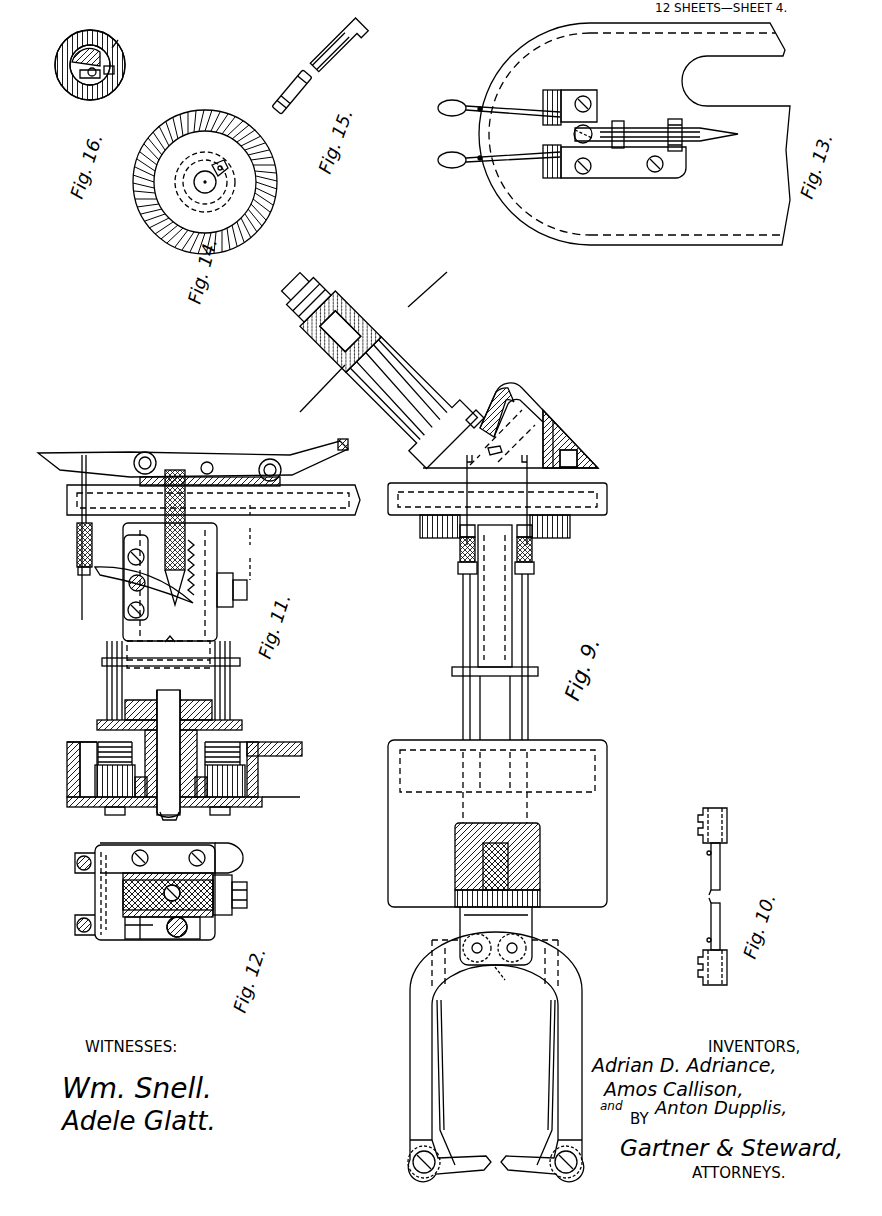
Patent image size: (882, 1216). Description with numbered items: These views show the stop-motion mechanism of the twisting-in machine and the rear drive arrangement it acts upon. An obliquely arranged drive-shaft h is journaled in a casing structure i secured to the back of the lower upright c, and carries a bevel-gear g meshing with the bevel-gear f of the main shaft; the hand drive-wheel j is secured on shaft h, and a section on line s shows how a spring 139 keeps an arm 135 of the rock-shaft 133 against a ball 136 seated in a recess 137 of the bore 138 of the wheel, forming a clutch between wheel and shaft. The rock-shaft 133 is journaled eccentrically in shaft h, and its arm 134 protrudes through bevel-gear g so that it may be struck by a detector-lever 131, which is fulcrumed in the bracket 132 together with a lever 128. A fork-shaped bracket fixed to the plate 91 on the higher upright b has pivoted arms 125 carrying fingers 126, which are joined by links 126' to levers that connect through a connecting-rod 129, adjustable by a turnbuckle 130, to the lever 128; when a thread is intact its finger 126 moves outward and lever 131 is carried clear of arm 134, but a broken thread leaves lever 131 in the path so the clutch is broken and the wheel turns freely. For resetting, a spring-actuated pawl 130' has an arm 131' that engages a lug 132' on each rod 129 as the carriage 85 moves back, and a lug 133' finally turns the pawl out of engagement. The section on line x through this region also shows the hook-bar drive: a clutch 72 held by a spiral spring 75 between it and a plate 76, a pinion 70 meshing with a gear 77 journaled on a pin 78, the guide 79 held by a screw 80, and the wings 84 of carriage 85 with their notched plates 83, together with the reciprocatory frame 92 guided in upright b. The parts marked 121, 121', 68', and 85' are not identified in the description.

In FIG. 16, the bore of the hand-wheel 138 is at (52, 44).
In FIG. 16, the arm of the rock-shaft 135 is at (104, 62).
In FIG. 15, the arm of the rock-shaft 135 is at (288, 104).
In FIG. 16, the ball 136 is at (114, 76).
In FIG. 16, the recess 137 is at (97, 77).
In FIG. 16, the spring 139 is at (88, 80).
In FIG. 16, the drive-wheel j is at (117, 44).
In FIG. 9, the drive-wheel j is at (372, 316).
In FIG. 14, the bevel-gear g is at (232, 128).
In FIG. 9, the bevel-gear g is at (516, 388).
In FIG. 14, the drive-shaft h is at (208, 190).
In FIG. 9, the drive-shaft h is at (428, 388).
In FIG. 14, the arm of the rock-shaft 134 is at (226, 172).
In FIG. 15, the arm of the rock-shaft 134 is at (376, 32).
In FIG. 9, the arm of the rock-shaft 134 is at (503, 449).
In FIG. 15, the rock-shaft 133 is at (292, 89).
In FIG. 9, the rock-shaft 133 is at (478, 396).
In FIG. 13, the lever 128 is at (521, 117).
In FIG. 11, the lever 128 is at (128, 452).
In FIG. 13, the screw 80 is at (591, 126).
In FIG. 11, the screw 80 is at (150, 505).
In FIG. 13, the detector-lever 131 is at (656, 123).
In FIG. 11, the detector-lever 131 is at (321, 439).
In FIG. 13, the bracket 132 is at (626, 195).
In FIG. 11, the bracket 132 is at (210, 454).
In FIG. 13, the upright c is at (713, 228).
In FIG. 9, the upright c is at (404, 490).
In FIG. 11, the upright c is at (213, 500).
In FIG. 9, the section line s is at (372, 342).
In FIG. 9, the casing structure i is at (540, 404).
In FIG. 9, the bevel-gear f is at (580, 508).
In FIG. 9, the turnbuckle 130 is at (486, 515).
In FIG. 11, the turnbuckle 130 is at (74, 537).
In FIG. 9, the connecting-rod 129 is at (466, 650).
In FIG. 11, the connecting-rod 129 is at (102, 655).
In FIG. 9, the carriage 85 is at (502, 632).
In FIG. 11, the carriage 85 is at (159, 582).
In FIG. 9, the upright b is at (430, 748).
In FIG. 11, the upright b is at (58, 758).
In FIG. 9, the reciprocatory frame 92 is at (470, 878).
In FIG. 9, the gear 121 is at (499, 936).
In FIG. 9, the plate 91 is at (586, 907).
In FIG. 9, the pivoted arms 125 is at (578, 984).
In FIG. 10, the pivoted arms 125 is at (728, 810).
In FIG. 9, the gear pin 121' is at (511, 988).
In FIG. 9, the links 126' is at (496, 1082).
In FIG. 9, the fingers 126 is at (495, 1138).
In FIG. 10, the fingers 126 is at (705, 896).
In FIG. 11, the section line x is at (46, 515).
In FIG. 11, the spring-actuated pawl 130' is at (126, 576).
In FIG. 12, the spring-actuated pawl 130' is at (185, 934).
In FIG. 11, the lug 133' is at (171, 537).
In FIG. 12, the lug 133' is at (180, 956).
In FIG. 11, the lug 132' is at (129, 594).
In FIG. 11, the sleeve 68' is at (164, 678).
In FIG. 11, the spiral spring 75 is at (100, 746).
In FIG. 11, the plate 76 is at (238, 745).
In FIG. 11, the clutch 72 is at (272, 760).
In FIG. 11, the pinion 70 is at (92, 800).
In FIG. 11, the nut 85' is at (170, 805).
In FIG. 11, the gear 77 is at (138, 808).
In FIG. 11, the notched plates 83 is at (150, 808).
In FIG. 11, the wings 84 is at (174, 820).
In FIG. 11, the pin 78 is at (202, 808).
In FIG. 12, the guide 79 is at (224, 848).
In FIG. 12, the arm of the pawl 131' is at (145, 892).